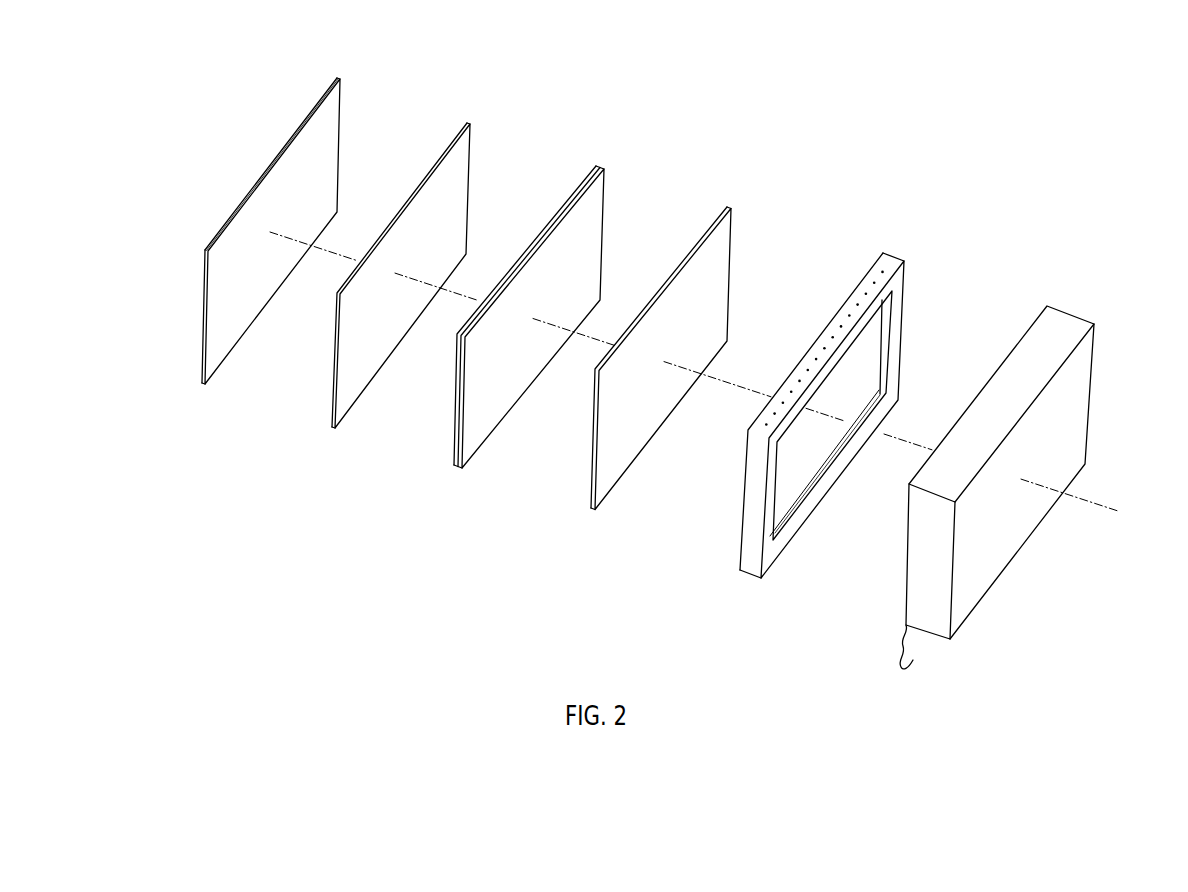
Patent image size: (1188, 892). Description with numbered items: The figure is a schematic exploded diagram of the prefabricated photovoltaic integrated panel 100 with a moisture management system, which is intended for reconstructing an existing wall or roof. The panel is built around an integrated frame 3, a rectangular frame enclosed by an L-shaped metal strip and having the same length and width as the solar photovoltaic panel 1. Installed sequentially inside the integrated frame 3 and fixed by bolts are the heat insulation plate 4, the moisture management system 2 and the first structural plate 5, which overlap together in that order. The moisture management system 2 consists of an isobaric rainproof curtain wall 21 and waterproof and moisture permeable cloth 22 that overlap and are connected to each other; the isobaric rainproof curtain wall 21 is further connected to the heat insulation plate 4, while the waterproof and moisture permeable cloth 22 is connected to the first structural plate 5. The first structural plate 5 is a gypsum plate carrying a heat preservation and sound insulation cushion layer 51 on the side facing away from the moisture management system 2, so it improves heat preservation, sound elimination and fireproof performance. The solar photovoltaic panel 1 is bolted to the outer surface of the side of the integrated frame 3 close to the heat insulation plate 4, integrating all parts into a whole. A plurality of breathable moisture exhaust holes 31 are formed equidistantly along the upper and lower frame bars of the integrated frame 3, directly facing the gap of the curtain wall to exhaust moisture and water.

The prefabricated photovoltaic integrated panel 100 is at (792, 117).
The solar photovoltaic panel 1 is at (1059, 339).
The moisture management system 2 is at (446, 283).
The isobaric rainproof curtain wall 21 is at (478, 422).
The waterproof and moisture permeable cloth 22 is at (328, 360).
The integrated frame 3 is at (873, 378).
The breathable moisture exhaust holes 31 is at (885, 264).
The heat insulation plate 4 is at (723, 247).
The first structural plate 5 is at (298, 219).
The heat preservation and sound insulation cushion layer 51 is at (255, 183).